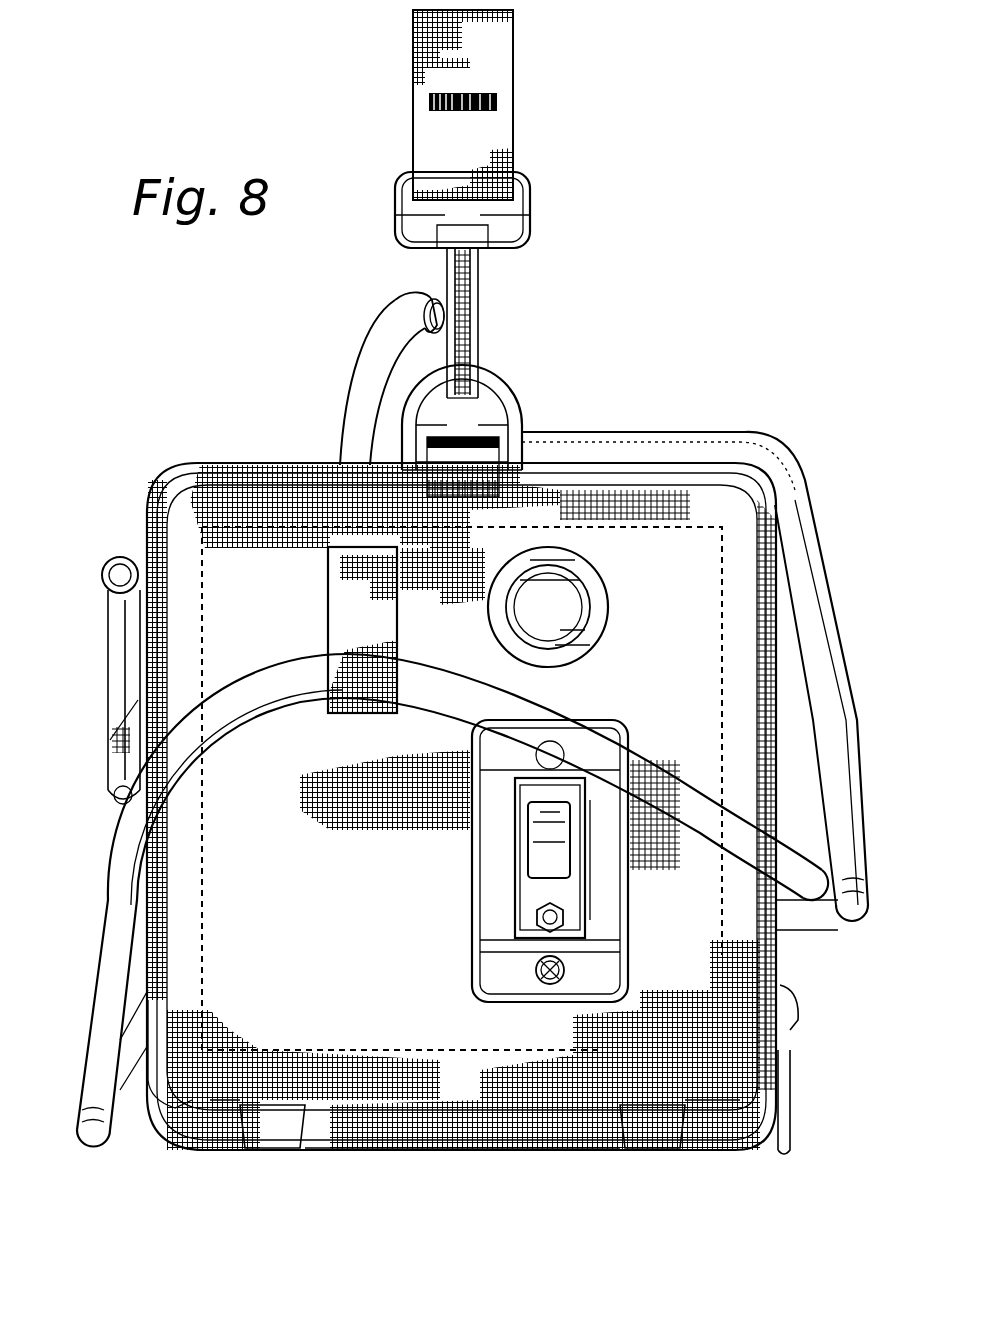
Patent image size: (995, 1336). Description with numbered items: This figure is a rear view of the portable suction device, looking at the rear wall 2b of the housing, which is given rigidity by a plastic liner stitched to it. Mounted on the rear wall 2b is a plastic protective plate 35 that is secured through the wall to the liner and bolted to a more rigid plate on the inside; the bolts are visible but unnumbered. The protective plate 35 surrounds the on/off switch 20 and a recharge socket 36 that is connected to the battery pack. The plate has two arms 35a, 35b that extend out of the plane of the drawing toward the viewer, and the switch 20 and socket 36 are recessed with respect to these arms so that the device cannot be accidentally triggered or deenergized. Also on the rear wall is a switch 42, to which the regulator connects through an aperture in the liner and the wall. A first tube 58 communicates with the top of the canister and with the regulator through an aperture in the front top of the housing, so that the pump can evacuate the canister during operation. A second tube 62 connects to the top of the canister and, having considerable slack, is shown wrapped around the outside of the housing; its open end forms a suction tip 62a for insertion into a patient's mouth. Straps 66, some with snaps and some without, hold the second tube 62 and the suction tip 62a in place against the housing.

The rear wall 2b is at (272, 910).
The on/off switch 20 is at (528, 858).
The plastic protective plate 35 is at (482, 780).
The arm 35a is at (522, 852).
The arm 35b is at (612, 888).
The recharge socket 36 is at (537, 918).
The switch 42 is at (600, 632).
The first tube 58 is at (362, 372).
The second tube 62 is at (278, 708).
The open end (suction tip) 62a is at (118, 798).
The straps 66 is at (326, 627).